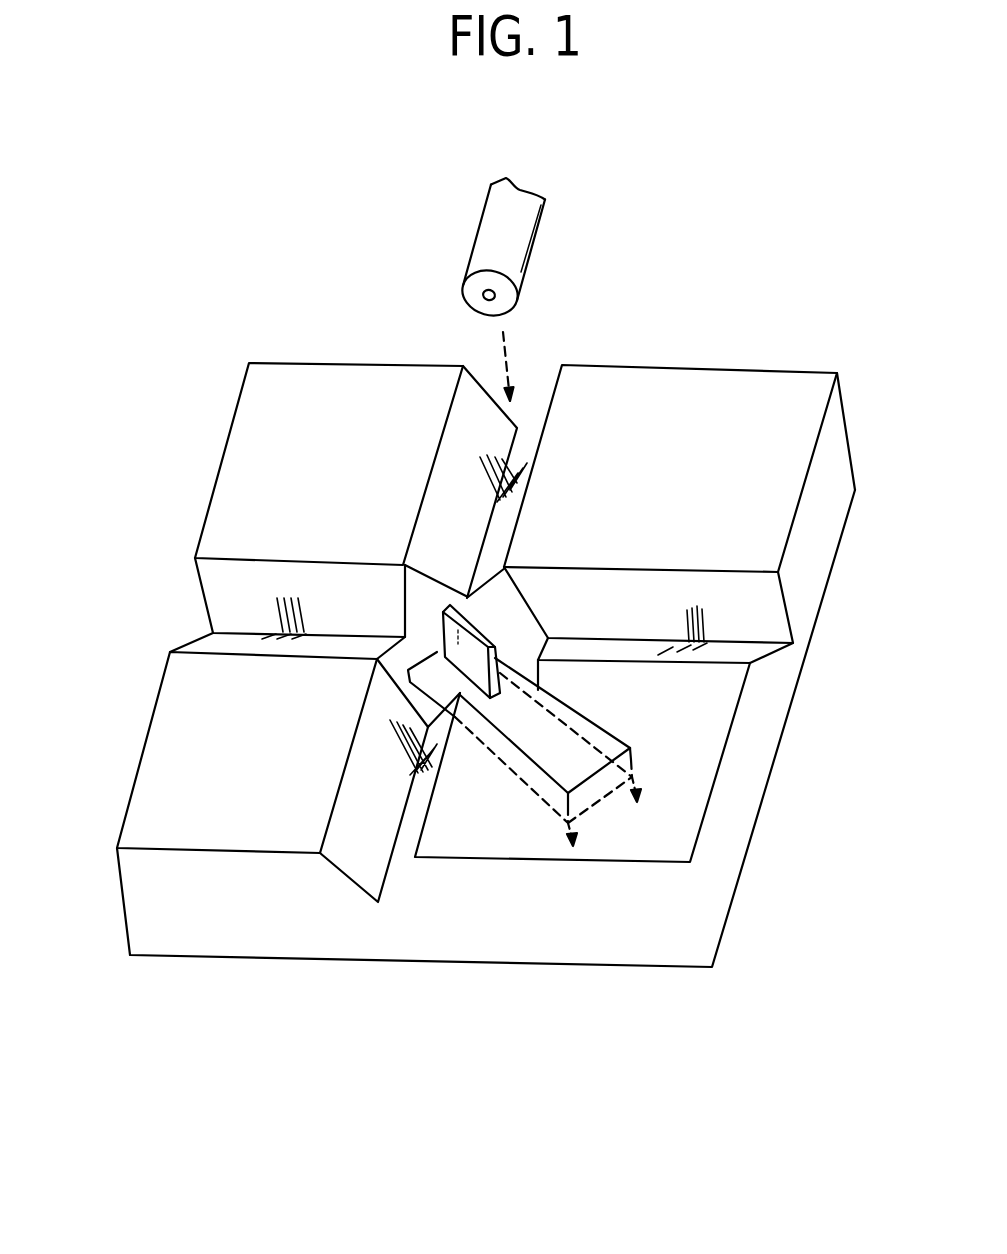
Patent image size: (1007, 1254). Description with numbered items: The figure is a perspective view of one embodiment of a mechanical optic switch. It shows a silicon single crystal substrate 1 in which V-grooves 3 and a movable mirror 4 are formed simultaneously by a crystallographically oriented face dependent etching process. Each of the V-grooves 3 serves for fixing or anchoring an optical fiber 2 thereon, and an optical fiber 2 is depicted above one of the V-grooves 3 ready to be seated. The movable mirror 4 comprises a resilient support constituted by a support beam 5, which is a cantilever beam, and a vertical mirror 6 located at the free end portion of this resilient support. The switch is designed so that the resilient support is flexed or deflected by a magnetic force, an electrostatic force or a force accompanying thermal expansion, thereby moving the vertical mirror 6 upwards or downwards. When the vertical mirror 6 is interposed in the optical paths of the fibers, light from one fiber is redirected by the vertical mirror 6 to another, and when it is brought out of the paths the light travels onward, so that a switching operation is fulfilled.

The silicon single crystal substrate 1 is at (211, 959).
The optical fiber 2 is at (538, 237).
The V-grooves 3 is at (529, 425).
The movable mirror 4 is at (554, 705).
The support beam 5 is at (567, 755).
The vertical mirror 6 is at (443, 612).